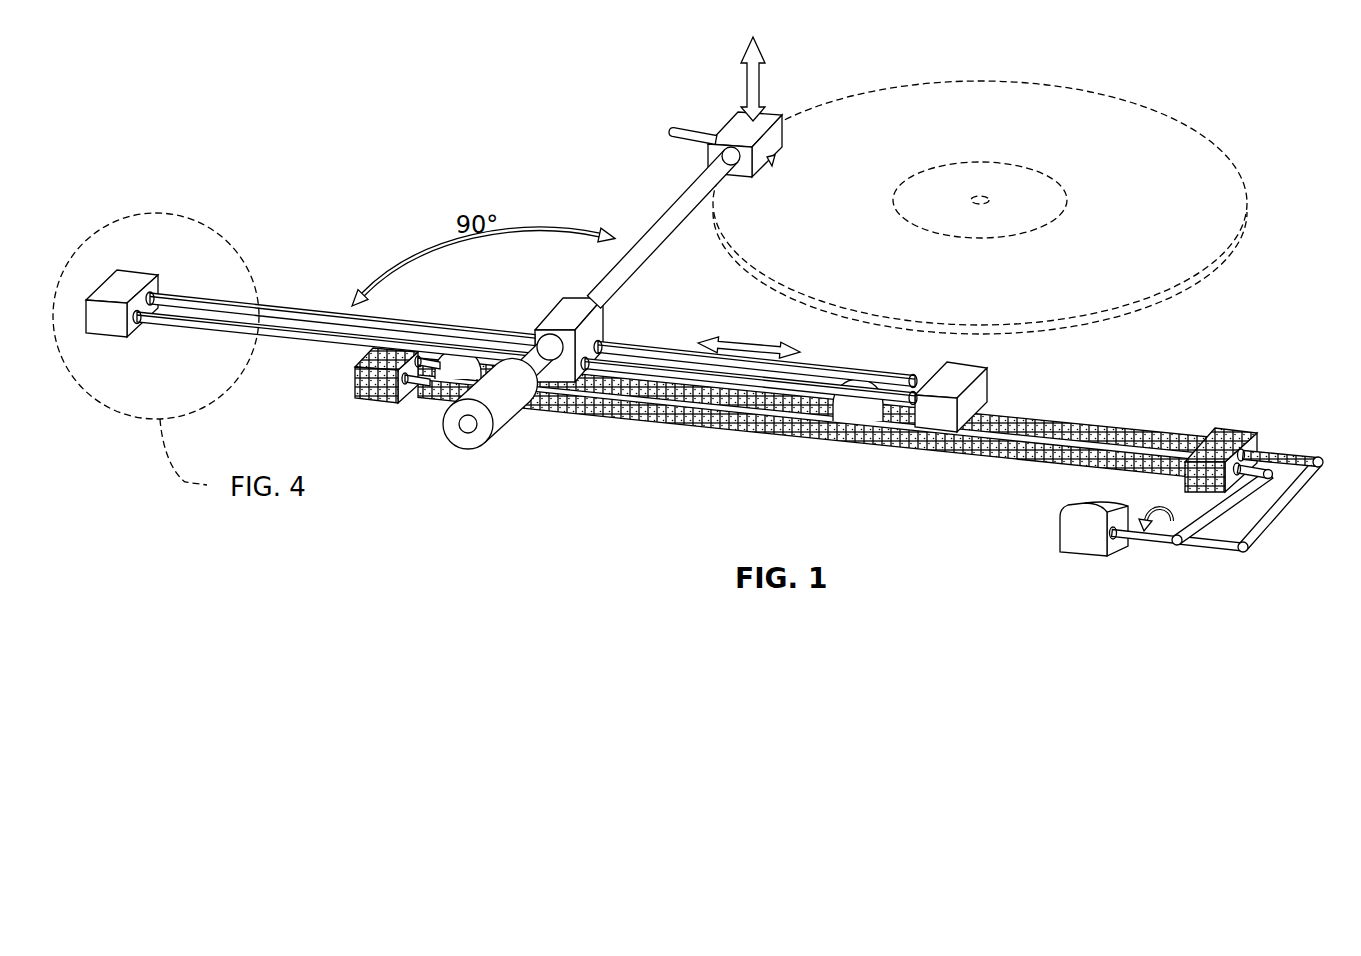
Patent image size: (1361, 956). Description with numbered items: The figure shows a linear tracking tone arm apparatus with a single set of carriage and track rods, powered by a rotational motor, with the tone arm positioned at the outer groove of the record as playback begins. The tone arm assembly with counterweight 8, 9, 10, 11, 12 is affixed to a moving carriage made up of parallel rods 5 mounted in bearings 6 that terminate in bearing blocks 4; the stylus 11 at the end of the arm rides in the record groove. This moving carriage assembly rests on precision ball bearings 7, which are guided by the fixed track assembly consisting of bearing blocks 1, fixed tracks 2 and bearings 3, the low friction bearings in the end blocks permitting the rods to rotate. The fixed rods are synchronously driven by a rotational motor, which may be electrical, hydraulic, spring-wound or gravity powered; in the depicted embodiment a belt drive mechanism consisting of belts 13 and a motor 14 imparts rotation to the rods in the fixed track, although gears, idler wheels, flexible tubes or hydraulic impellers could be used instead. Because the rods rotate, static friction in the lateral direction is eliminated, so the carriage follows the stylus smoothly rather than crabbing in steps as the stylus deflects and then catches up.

The bearing block 1 is at (355, 384).
The fixed track 2 is at (1030, 431).
The bearing 3 is at (1255, 450).
The bearing block 4 is at (136, 268).
The parallel rod 5 is at (250, 307).
The bearing 6 is at (155, 292).
The precision ball bearing 7 is at (452, 366).
The tone arm assembly 8 is at (552, 308).
The tone arm assembly 9 is at (670, 203).
The tone arm assembly 10 is at (720, 131).
The stylus 11 is at (786, 170).
The tone arm assembly 12 is at (508, 418).
The belt 13 is at (1183, 541).
The motor 14 is at (1062, 542).